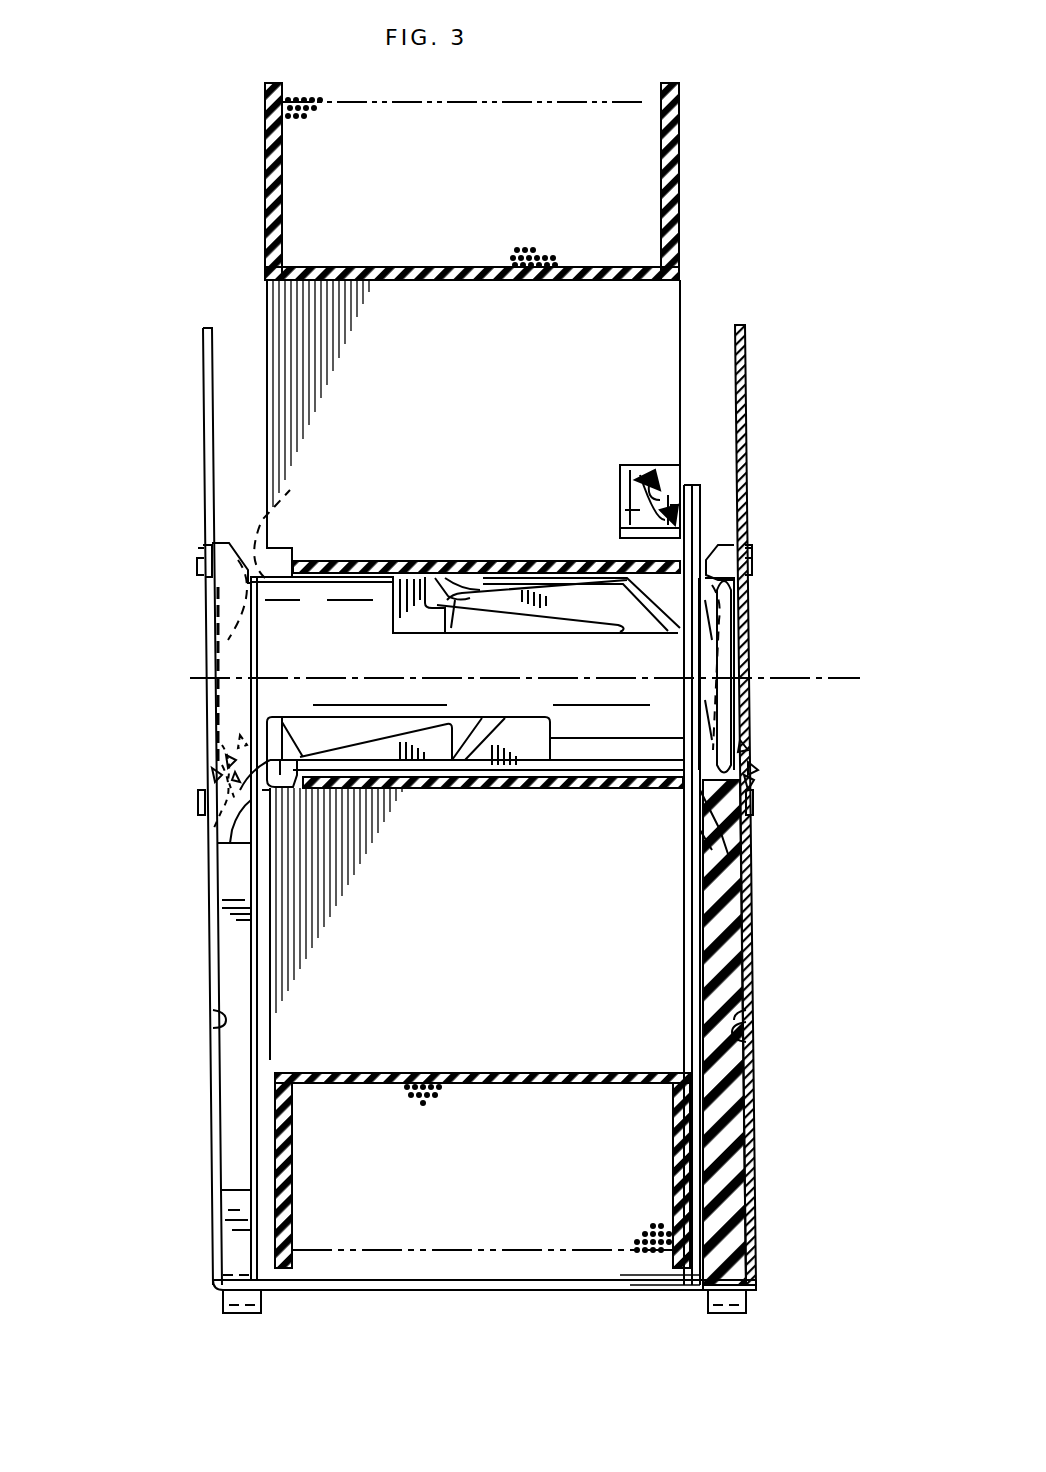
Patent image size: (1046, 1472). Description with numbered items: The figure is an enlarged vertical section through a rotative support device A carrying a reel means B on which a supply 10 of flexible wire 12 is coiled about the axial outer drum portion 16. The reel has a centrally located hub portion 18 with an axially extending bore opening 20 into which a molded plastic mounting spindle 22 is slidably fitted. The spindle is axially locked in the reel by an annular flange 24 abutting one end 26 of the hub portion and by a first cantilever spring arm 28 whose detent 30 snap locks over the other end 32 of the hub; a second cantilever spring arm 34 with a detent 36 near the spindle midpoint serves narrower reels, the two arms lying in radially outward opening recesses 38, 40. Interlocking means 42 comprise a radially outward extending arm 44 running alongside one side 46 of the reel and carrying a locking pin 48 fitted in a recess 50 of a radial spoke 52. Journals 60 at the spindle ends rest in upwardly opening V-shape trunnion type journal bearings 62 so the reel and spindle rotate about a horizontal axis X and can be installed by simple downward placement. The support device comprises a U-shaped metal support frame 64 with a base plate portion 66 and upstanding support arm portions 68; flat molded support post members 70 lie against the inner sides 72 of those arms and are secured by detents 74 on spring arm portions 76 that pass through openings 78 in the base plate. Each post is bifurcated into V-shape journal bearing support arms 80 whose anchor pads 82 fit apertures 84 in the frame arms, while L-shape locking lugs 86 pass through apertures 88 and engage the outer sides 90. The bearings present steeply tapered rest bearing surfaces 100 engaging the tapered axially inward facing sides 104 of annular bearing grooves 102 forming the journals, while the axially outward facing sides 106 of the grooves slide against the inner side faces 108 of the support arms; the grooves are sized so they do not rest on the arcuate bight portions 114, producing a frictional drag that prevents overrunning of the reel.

The supply of flexible wire 10 is at (306, 96).
The flexible wire 12 is at (310, 115).
The axial outer drum portion 16 is at (455, 268).
The hub portion 18 is at (520, 790).
The bore opening 20 is at (502, 575).
The mounting spindle 22 is at (338, 600).
The annular flange 24 is at (690, 735).
The end of reel hub portion 26 is at (688, 789).
The first cantilever spring arm 28 is at (402, 789).
The detent 30 is at (277, 720).
The other end of hub portion 32 is at (236, 805).
The second cantilever spring arm 34 is at (550, 585).
The detent 36 is at (440, 598).
The recess 38 is at (345, 735).
The recess 40 is at (455, 622).
The interlocking means 42 is at (702, 485).
The radially outward extending arm 44 is at (694, 528).
The side of reel 46 is at (683, 335).
The locking pin 48 is at (686, 485).
The recess 50 is at (640, 470).
The radial spoke 52 is at (680, 1050).
The journal 60 is at (270, 520).
The V-shape trunnion type journal bearing 62 is at (725, 815).
The support frame 64 is at (385, 1292).
The base plate portion 66 is at (655, 1290).
The support arm portion 68 is at (205, 432).
The support post member 70 is at (228, 940).
The inner side of support arm portion 72 is at (222, 1018).
The detent 74 is at (242, 1313).
The spring arm portion 76 is at (235, 1250).
The opening 78 is at (726, 1303).
The V-shape journal bearing support arm 80 is at (222, 555).
The anchor pad 82 is at (205, 572).
The aperture 84 is at (200, 550).
The L-shape locking lug 86 is at (198, 800).
The aperture 88 is at (245, 795).
The outer side of support arm portion 90 is at (213, 988).
The rest bearing surface 100 is at (732, 618).
The annular bearing groove 102 is at (240, 742).
The axially inward facing side 104 is at (232, 760).
The axially outward facing side 106 is at (732, 748).
The inner side face 108 is at (700, 825).
The bight portion 114 is at (212, 772).
The support device A is at (200, 508).
The reel means B is at (262, 140).
The longitudinal axis X is at (780, 670).